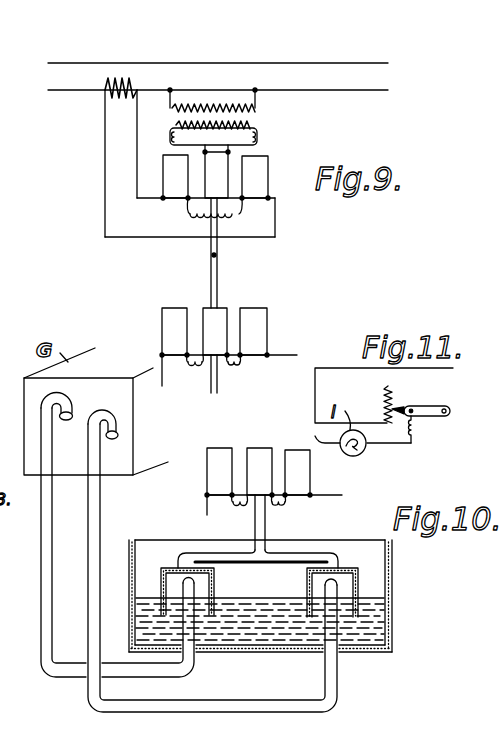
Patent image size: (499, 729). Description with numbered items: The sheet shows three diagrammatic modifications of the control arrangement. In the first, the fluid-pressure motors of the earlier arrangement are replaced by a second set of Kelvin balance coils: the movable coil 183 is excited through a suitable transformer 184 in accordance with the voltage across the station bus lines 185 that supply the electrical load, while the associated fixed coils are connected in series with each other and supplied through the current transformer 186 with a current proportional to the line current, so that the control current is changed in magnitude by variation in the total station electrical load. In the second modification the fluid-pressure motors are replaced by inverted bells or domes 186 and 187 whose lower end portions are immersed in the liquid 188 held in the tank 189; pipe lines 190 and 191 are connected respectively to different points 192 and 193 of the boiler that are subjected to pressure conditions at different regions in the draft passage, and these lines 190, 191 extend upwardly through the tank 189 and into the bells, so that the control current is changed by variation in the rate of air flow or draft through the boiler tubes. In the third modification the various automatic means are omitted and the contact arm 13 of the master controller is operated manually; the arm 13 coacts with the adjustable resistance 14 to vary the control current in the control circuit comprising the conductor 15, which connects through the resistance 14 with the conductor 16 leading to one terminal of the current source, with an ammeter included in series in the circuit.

In FIG. 11, the contact arm 13 is at (399, 408).
In FIG. 11, the adjustable resistance 14 is at (384, 399).
In FIG. 11, the conductor 15 is at (315, 436).
In FIG. 11, the conductor 16 is at (453, 368).
In FIG. 9, the movable coil 183 is at (218, 173).
In FIG. 9, the transformer 184 is at (258, 116).
In FIG. 9, the station bus lines 185 is at (345, 90).
In FIG. 9, the current transformer 186 is at (120, 100).
In FIG. 10, the current transformer 186 is at (163, 568).
In FIG. 10, the inverted bell 187 is at (362, 574).
In FIG. 10, the liquid 188 is at (270, 641).
In FIG. 10, the tank 189 is at (393, 558).
In FIG. 10, the pipe line 190 is at (42, 552).
In FIG. 10, the pipe line 191 is at (92, 576).
In FIG. 10, the boiler point 192 is at (68, 421).
In FIG. 10, the boiler point 193 is at (118, 433).